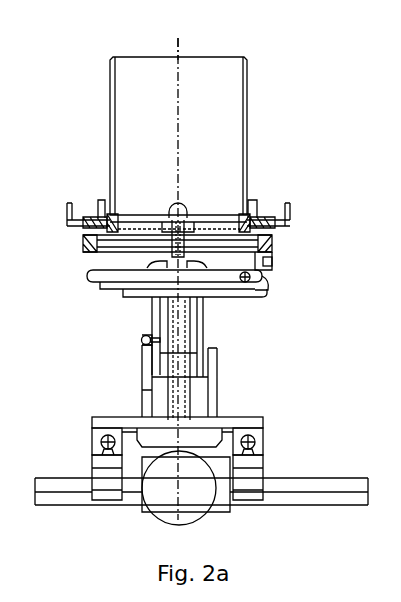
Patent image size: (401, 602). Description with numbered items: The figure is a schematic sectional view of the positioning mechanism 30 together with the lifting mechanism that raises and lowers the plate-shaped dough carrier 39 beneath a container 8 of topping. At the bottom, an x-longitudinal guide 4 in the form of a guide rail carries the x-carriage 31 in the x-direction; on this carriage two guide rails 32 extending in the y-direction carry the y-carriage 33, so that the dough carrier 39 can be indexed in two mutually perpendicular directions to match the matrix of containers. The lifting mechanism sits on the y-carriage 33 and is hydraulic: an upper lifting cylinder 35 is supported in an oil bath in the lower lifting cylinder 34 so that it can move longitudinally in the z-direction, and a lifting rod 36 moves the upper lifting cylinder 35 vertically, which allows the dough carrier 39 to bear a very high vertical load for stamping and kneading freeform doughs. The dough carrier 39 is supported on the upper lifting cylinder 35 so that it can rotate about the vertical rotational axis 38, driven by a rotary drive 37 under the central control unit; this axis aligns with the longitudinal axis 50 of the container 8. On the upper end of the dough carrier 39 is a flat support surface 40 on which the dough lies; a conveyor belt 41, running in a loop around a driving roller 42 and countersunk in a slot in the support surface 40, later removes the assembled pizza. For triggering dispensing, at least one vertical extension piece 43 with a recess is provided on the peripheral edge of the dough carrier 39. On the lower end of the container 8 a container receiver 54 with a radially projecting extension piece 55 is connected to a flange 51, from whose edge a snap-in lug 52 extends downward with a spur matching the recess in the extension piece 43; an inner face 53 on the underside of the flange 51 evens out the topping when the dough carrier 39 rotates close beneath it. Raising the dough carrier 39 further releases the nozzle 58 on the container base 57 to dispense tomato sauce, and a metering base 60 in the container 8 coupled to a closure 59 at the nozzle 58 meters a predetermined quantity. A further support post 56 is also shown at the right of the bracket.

The x-longitudinal guide 4 is at (313, 487).
The container 8 is at (247, 110).
The positioning mechanism 30 is at (55, 355).
The x-carriage 31 is at (250, 500).
The guide rails 32 is at (105, 438).
The y-carriage 33 is at (263, 420).
The lower lifting cylinder 34 is at (216, 380).
The upper lifting cylinder 35 is at (203, 318).
The lifting rod 36 is at (172, 385).
The rotary drive 37 is at (142, 340).
The rotational axis 38 is at (173, 312).
The dough carrier 39 is at (265, 297).
The support surface 40 is at (95, 268).
The conveyor belt 41 is at (100, 286).
The driving roller 42 is at (262, 282).
The extension piece 43 is at (273, 266).
The longitudinal axis 50 is at (180, 45).
The flange 51 is at (273, 243).
The snap-in lug 52 is at (273, 257).
The inner face 53 is at (83, 243).
The container receiver 54 is at (250, 210).
The extension piece 55 is at (263, 218).
The right post 56 is at (292, 213).
The container base 57 is at (146, 222).
The nozzle 58 is at (168, 216).
The closure 59 is at (186, 215).
The metering base 60 is at (114, 208).